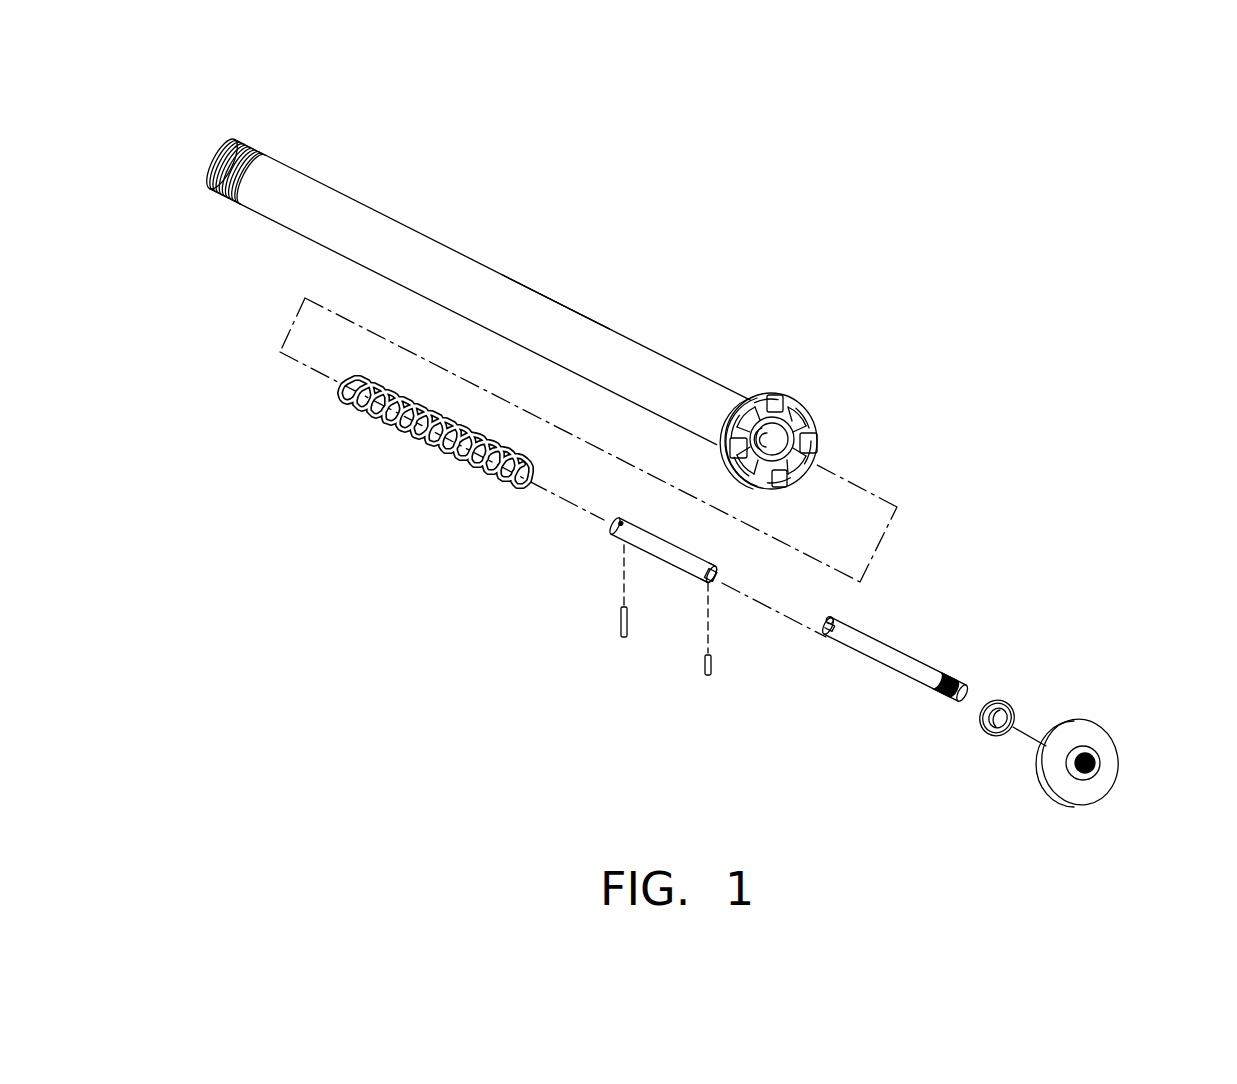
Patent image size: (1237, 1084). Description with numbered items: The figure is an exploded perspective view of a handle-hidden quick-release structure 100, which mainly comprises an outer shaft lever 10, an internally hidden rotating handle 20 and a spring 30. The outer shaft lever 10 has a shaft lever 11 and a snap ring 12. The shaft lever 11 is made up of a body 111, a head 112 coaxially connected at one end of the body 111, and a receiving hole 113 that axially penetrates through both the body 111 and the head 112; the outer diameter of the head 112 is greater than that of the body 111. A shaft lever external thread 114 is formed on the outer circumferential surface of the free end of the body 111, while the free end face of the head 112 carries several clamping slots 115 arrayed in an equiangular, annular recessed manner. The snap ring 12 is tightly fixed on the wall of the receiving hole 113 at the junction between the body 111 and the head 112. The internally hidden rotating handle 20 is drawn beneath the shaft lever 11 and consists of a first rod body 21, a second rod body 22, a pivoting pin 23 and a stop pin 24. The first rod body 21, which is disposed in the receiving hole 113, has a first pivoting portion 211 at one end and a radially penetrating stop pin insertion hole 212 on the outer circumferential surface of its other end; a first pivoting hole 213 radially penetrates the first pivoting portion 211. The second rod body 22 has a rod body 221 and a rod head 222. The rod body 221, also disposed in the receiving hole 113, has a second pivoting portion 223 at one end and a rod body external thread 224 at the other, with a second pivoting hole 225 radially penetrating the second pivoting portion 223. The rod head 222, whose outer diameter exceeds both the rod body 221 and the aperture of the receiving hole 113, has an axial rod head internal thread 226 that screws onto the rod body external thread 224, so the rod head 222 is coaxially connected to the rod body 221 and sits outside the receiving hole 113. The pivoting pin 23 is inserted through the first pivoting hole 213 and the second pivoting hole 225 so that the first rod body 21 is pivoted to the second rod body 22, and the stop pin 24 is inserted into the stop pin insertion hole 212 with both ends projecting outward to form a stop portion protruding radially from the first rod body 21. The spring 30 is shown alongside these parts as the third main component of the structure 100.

The handle-hidden quick-release structure 100 is at (1128, 258).
The outer shaft lever 10 is at (745, 143).
The shaft lever 11 is at (523, 271).
The body 111 is at (561, 268).
The head 112 is at (845, 412).
The receiving hole 113 is at (735, 440).
The shaft lever external thread 114 is at (252, 140).
The clamping slots 115 is at (817, 450).
The snap ring 12 is at (1003, 700).
The internally hidden rotating handle 20 is at (871, 758).
The first rod body 21 is at (675, 546).
The first pivoting portion 211 is at (715, 590).
The stop pin insertion hole 212 is at (629, 518).
The first pivoting hole 213 is at (722, 574).
The second rod body 22 is at (979, 576).
The rod body 221 is at (900, 668).
The rod head 222 is at (1100, 751).
The second pivoting portion 223 is at (825, 640).
The rod body external thread 224 is at (954, 684).
The second pivoting hole 225 is at (834, 624).
The rod head internal thread 226 is at (1088, 762).
The pivoting pin 23 is at (700, 668).
The stop pin 24 is at (620, 622).
The spring 30 is at (420, 450).